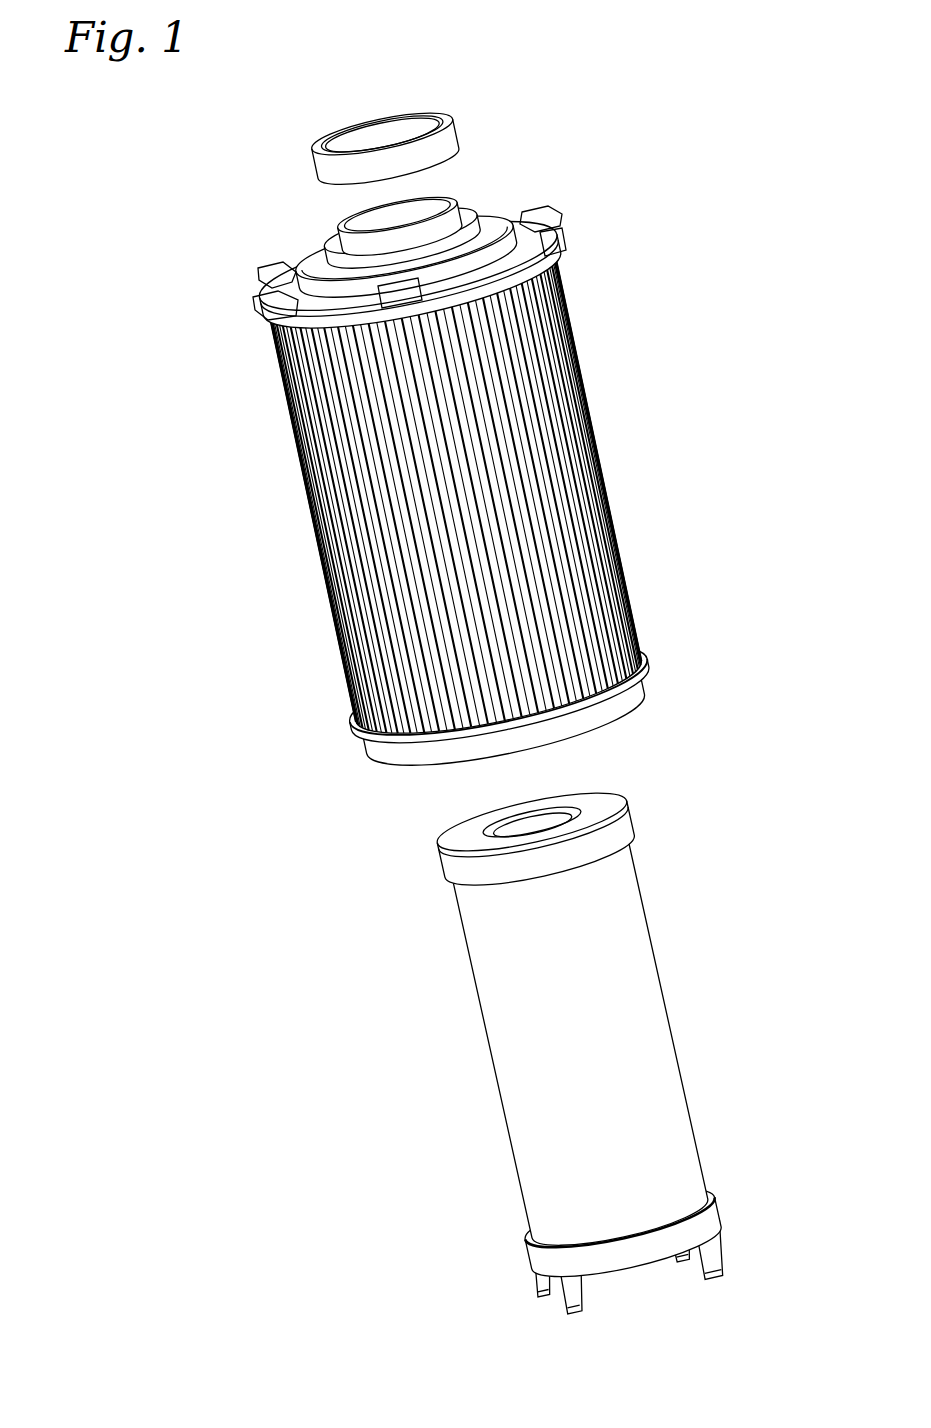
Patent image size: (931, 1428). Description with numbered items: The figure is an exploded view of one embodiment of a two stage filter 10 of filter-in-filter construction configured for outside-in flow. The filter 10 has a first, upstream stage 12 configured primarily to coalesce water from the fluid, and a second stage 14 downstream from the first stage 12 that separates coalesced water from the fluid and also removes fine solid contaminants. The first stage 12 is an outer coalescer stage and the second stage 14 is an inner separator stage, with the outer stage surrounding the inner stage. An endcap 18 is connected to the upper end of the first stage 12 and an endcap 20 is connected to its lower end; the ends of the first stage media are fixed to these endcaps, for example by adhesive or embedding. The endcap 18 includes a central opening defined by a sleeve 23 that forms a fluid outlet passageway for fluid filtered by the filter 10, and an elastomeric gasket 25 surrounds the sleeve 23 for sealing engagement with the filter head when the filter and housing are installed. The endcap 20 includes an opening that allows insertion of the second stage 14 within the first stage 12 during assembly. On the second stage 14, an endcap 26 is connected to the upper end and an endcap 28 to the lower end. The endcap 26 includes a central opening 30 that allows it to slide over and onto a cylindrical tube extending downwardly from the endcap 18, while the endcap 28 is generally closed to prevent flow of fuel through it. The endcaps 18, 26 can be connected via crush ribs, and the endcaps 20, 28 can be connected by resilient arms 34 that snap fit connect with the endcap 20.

The two stage filter 10 is at (721, 270).
The first stage 12 is at (612, 366).
The second stage 14 is at (688, 932).
The endcap 18 is at (562, 226).
The endcap 20 is at (652, 690).
The sleeve 23 is at (338, 228).
The elastomeric gasket 25 is at (326, 140).
The endcap 26 is at (632, 822).
The endcap 28 is at (712, 1206).
The central opening 30 is at (525, 832).
The resilient arms 34 is at (565, 1300).